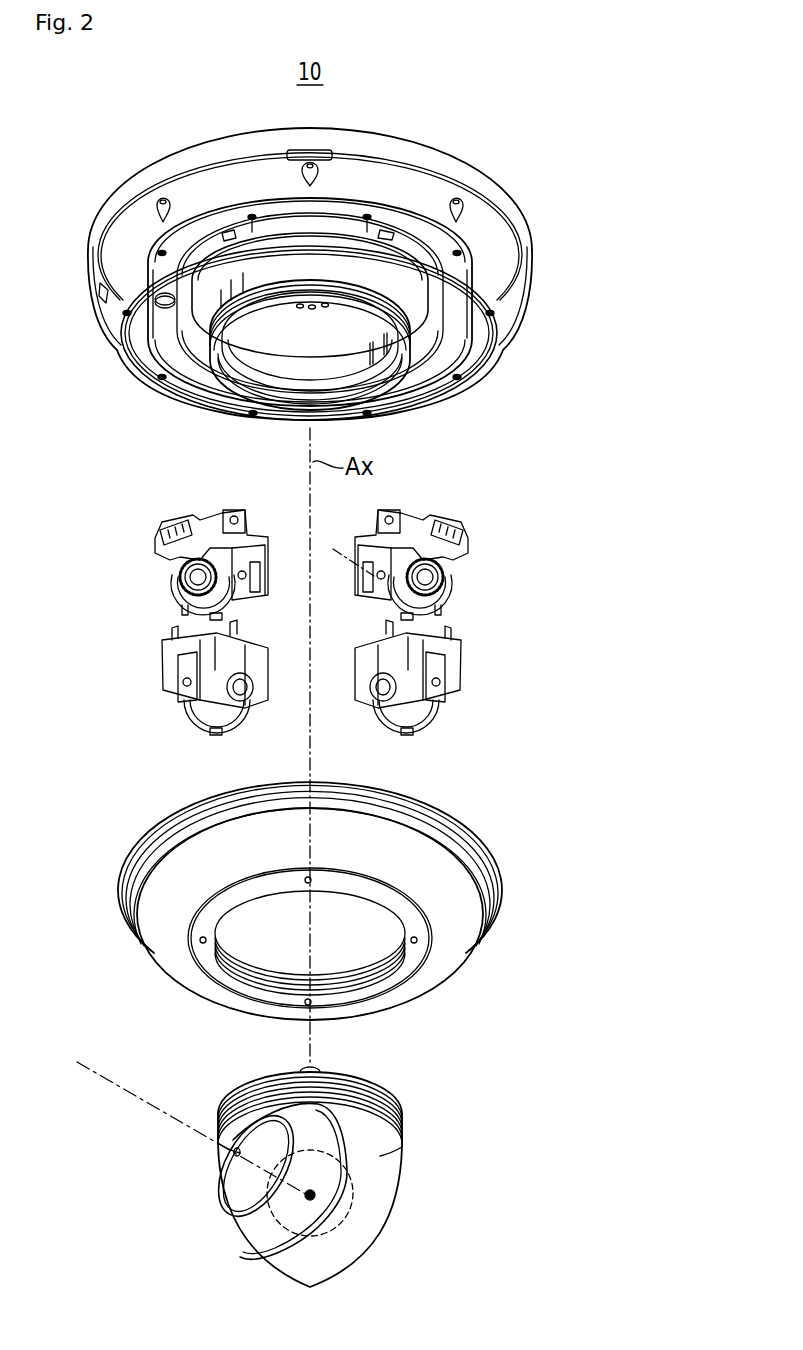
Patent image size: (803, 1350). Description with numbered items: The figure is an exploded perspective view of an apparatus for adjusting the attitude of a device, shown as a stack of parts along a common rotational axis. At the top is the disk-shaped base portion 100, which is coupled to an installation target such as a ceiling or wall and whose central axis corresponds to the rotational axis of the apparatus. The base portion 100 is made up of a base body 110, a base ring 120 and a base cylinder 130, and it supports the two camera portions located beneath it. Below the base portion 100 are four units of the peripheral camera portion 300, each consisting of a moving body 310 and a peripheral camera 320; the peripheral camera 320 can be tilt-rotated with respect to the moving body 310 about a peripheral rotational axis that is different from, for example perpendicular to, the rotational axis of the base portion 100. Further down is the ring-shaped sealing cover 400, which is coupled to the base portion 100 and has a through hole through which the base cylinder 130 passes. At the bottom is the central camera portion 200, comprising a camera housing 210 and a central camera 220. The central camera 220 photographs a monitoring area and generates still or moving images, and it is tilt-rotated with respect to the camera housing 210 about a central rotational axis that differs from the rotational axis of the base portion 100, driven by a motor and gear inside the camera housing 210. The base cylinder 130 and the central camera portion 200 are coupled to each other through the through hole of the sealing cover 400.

The base portion 100 is at (398, 274).
The base body 110 is at (517, 233).
The base ring 120 is at (450, 312).
The base cylinder 130 is at (368, 395).
The central camera portion 200 is at (301, 1159).
The camera housing 210 is at (400, 1213).
The central camera 220 is at (347, 1222).
The peripheral camera portion 300 is at (374, 622).
The moving body 310 is at (455, 570).
The peripheral camera 320 is at (438, 607).
The sealing cover 400 is at (437, 987).